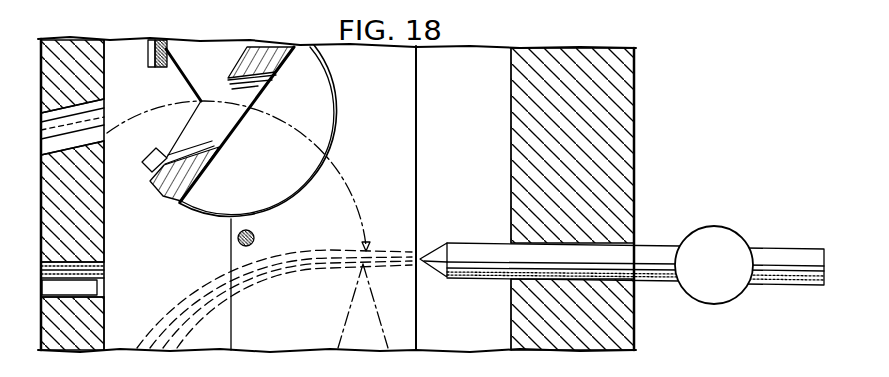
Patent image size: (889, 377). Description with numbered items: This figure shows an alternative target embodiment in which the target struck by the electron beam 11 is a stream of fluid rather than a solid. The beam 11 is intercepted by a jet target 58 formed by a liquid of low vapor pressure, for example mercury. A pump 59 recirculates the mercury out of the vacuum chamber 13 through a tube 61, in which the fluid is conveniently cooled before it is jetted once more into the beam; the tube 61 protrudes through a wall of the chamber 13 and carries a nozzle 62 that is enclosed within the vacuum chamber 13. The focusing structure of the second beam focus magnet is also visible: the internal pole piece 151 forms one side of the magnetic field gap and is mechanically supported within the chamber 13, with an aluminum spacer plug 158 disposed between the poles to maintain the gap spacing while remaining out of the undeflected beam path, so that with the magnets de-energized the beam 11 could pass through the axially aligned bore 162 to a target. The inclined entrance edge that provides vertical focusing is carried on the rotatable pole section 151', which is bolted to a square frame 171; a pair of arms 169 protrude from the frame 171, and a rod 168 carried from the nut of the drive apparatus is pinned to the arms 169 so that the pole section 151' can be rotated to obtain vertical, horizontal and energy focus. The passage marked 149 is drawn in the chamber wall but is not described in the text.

The electron beam 11 is at (345, 172).
The vacuum chamber 13 is at (636, 150).
The jet target 58 is at (386, 253).
The pump 59 is at (698, 242).
The tube 61 is at (770, 255).
The nozzle 62 is at (431, 244).
The inclined bore / shaft 149 is at (105, 125).
The pole piece 151 is at (210, 284).
The rotatable pole section 151' is at (258, 146).
The aluminum spacer plug 158 is at (235, 236).
The axially aligned bore 162 is at (104, 281).
The rod 168 is at (149, 48).
The arms 169 is at (228, 83).
The square frame 171 is at (181, 135).